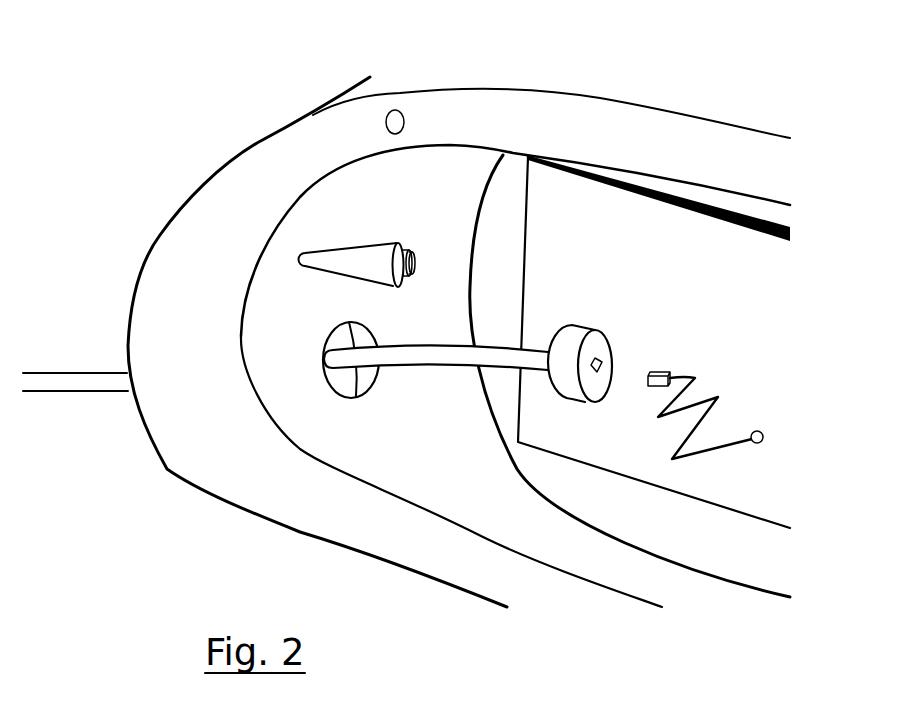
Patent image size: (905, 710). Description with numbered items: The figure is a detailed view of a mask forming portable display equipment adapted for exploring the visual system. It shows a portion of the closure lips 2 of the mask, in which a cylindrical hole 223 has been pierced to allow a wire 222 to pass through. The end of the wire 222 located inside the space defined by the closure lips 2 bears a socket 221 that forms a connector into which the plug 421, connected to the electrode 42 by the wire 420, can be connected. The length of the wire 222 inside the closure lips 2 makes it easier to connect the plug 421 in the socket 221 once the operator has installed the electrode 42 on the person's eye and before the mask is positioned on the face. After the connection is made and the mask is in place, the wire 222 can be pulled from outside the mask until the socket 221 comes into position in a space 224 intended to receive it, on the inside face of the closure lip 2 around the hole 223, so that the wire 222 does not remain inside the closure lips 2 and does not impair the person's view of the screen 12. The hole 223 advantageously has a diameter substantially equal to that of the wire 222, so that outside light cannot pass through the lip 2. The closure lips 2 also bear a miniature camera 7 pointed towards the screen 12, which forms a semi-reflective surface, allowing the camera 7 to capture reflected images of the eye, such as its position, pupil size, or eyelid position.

The closure lips 2 is at (358, 150).
The miniature camera 7 is at (380, 261).
The left-hand display screen 12 is at (713, 254).
The socket 221 is at (597, 352).
The wire 222 is at (73, 383).
The cylindrical hole 223 is at (327, 364).
The space 224 is at (340, 337).
The electrode 42 is at (757, 431).
The wire 420 is at (702, 453).
The plug 421 is at (650, 387).